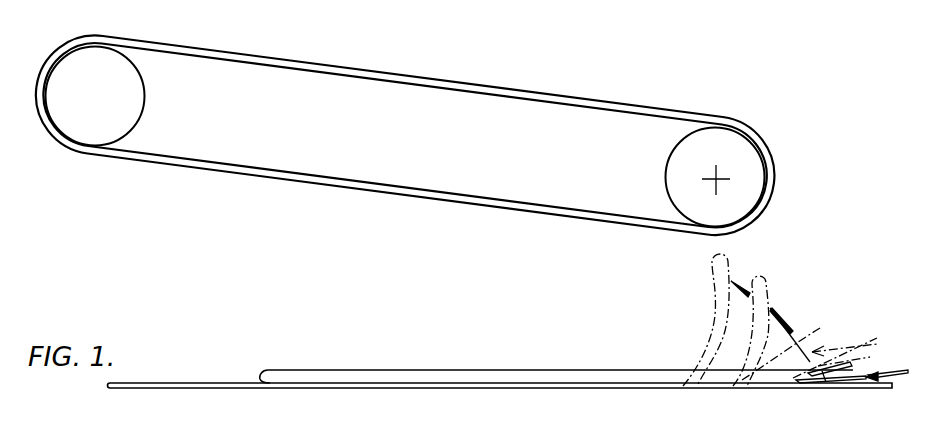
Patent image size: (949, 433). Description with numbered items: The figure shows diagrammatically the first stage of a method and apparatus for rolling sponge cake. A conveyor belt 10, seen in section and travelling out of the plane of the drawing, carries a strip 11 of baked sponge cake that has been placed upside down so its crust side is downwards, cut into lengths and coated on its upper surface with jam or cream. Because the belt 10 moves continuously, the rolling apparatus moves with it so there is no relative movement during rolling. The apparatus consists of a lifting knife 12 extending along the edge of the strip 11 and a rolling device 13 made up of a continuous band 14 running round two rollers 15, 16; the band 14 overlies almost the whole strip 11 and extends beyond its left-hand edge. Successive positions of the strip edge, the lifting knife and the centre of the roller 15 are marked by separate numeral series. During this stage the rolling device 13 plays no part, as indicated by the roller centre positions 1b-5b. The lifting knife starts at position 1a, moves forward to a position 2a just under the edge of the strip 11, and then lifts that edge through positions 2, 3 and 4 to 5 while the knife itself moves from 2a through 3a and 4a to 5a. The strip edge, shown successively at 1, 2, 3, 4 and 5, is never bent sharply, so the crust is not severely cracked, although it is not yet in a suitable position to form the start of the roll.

The edge of the strip 1 is at (841, 377).
The lifting knife 1a is at (892, 381).
The edge of the strip 2 is at (834, 370).
The lifting knife 2a is at (822, 381).
The edge of the strip 3 is at (818, 333).
The lifting knife 3a is at (862, 357).
The edge of the strip 4 is at (764, 287).
The lifting knife 4a is at (773, 307).
The edge of the strip 5 is at (720, 254).
The lifting knife 5a is at (730, 282).
The centre of the roller 1b-5b is at (718, 178).
The conveyor belt 10 is at (505, 388).
The strip 11 is at (418, 370).
The lifting knife 12 is at (868, 349).
The rolling device 13 is at (434, 136).
The continuous band 14 is at (468, 198).
The roller 15 is at (678, 177).
The roller 16 is at (133, 93).